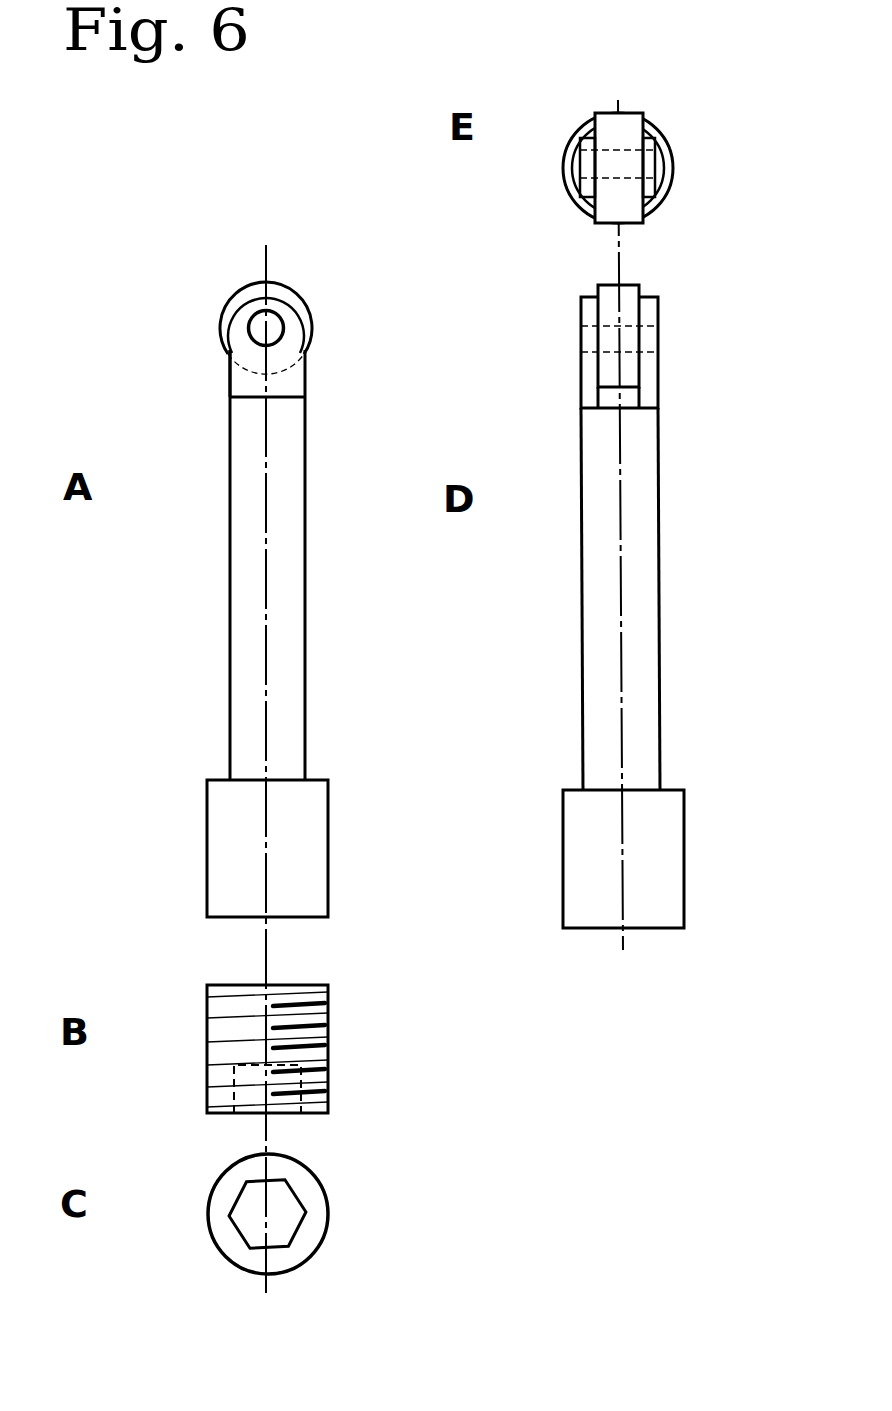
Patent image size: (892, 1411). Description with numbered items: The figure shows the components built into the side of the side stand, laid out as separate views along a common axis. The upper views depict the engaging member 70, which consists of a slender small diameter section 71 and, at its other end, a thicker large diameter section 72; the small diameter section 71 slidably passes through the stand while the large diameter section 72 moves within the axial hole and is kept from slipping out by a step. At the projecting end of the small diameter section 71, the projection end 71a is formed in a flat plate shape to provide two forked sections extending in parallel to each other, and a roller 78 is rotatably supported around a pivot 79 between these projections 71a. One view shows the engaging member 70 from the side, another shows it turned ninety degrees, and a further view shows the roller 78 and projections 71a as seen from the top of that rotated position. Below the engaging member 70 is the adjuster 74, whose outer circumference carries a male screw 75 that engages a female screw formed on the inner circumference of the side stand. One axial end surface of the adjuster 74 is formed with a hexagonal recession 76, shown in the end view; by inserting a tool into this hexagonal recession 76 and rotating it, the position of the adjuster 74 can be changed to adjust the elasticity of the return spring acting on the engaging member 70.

The engaging member 70 is at (213, 549).
The small diameter section 71 is at (302, 460).
The projection end 71a is at (232, 379).
The large diameter section 72 is at (312, 863).
The adjuster 74 is at (228, 987).
The male screw 75 is at (218, 1053).
The hexagonal recession 76 is at (292, 1223).
The roller 78 is at (236, 292).
The pivot 79 is at (283, 325).